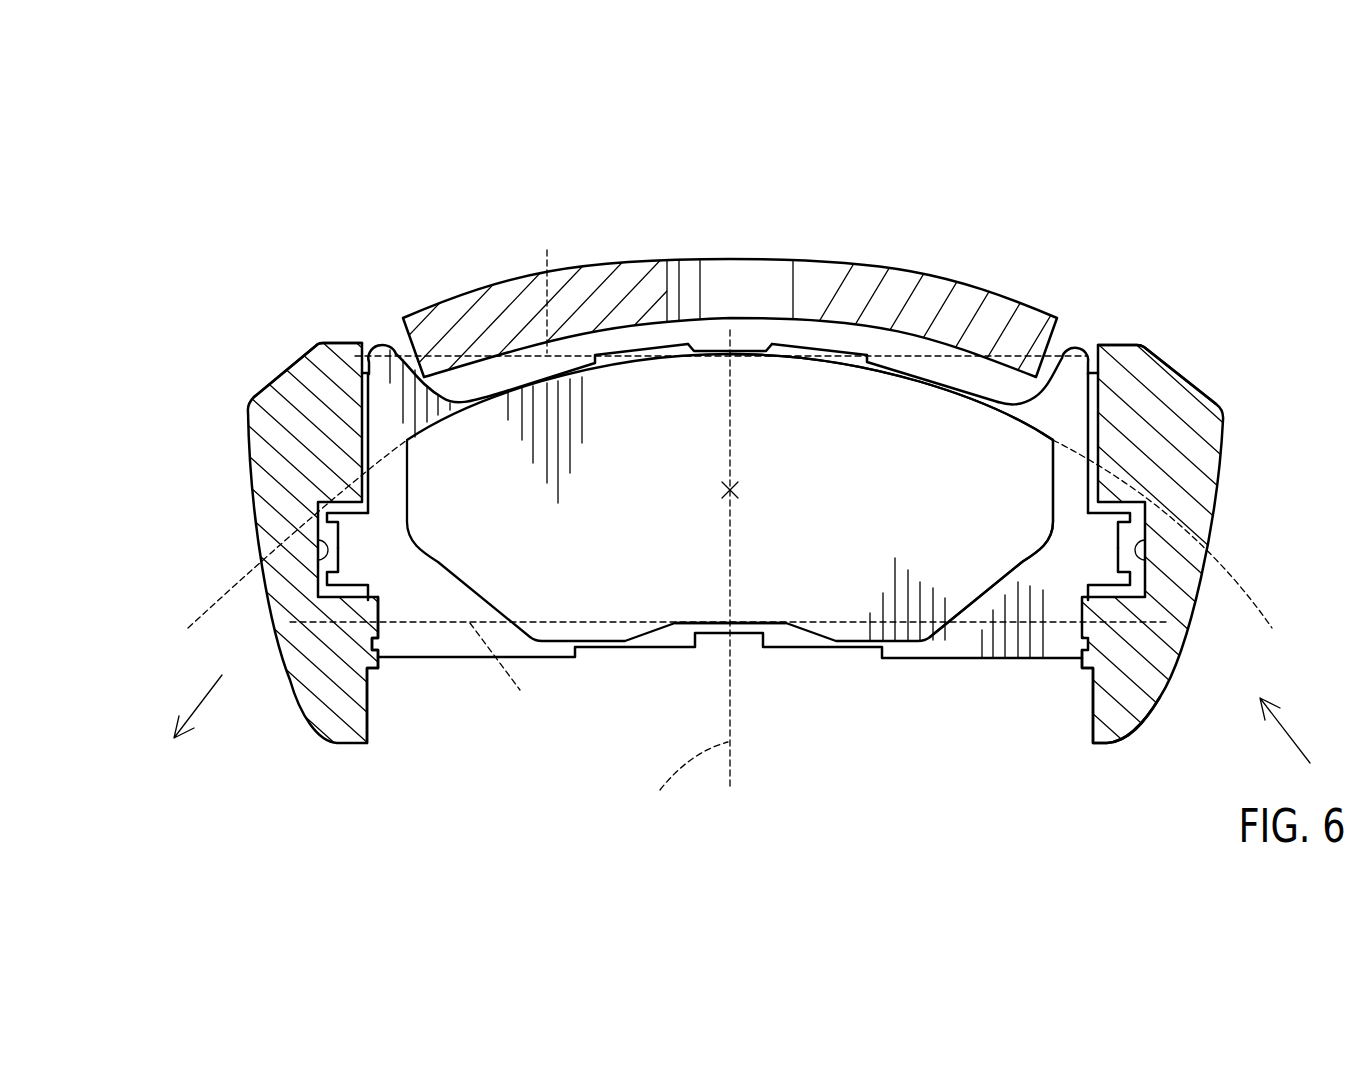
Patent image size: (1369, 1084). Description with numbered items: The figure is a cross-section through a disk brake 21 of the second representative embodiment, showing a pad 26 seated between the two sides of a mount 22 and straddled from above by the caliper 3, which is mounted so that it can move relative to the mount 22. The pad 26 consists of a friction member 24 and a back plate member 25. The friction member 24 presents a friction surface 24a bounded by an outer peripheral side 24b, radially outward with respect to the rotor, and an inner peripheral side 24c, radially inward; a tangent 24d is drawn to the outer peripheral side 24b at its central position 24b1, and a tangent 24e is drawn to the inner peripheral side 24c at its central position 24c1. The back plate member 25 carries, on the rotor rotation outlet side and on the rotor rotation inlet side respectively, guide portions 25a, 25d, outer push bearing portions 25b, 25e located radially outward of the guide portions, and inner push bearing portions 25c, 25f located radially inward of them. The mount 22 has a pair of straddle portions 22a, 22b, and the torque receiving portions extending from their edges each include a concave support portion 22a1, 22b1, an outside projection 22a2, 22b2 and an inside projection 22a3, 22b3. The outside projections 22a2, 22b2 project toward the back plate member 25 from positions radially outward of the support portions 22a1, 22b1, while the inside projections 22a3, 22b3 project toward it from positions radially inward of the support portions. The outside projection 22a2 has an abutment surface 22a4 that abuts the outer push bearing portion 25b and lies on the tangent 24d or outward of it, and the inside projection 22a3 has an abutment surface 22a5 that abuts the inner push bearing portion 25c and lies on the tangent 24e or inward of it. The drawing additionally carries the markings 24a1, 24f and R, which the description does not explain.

The caliper 3 is at (1013, 330).
The disk brake 21 is at (752, 213).
The mount 22 is at (303, 377).
The straddle portion 22a is at (273, 413).
The support portion 22a1 is at (326, 549).
The outside projection 22a2 is at (355, 341).
The inside projection 22a3 is at (375, 652).
The abutment surface 22a4 is at (383, 349).
The abutment surface 22a5 is at (390, 657).
The straddle portion 22b is at (1193, 420).
The support portion 22b1 is at (1137, 549).
The outside projection 22b2 is at (1113, 363).
The inside projection 22b3 is at (1145, 695).
The friction member 24 is at (685, 403).
The friction surface 24a is at (777, 403).
The center of curvature 24a1 is at (735, 488).
The outer peripheral side 24b is at (918, 387).
The central position 24b1 is at (730, 351).
The inner peripheral side 24c is at (830, 645).
The central position 24c1 is at (732, 624).
The tangent 24d is at (537, 286).
The tangent 24e is at (514, 673).
The backing plate center line 24f is at (681, 782).
The back plate member 25 is at (619, 356).
The guide portion 25a is at (350, 550).
The outer push bearing portion 25b is at (412, 372).
The inner push bearing portion 25c is at (378, 598).
The guide portion 25d is at (1103, 550).
The outer push bearing portion 25e is at (1085, 405).
The inner push bearing portion 25f is at (1080, 613).
The pad 26 is at (658, 202).
The radius of curvature R is at (1237, 610).